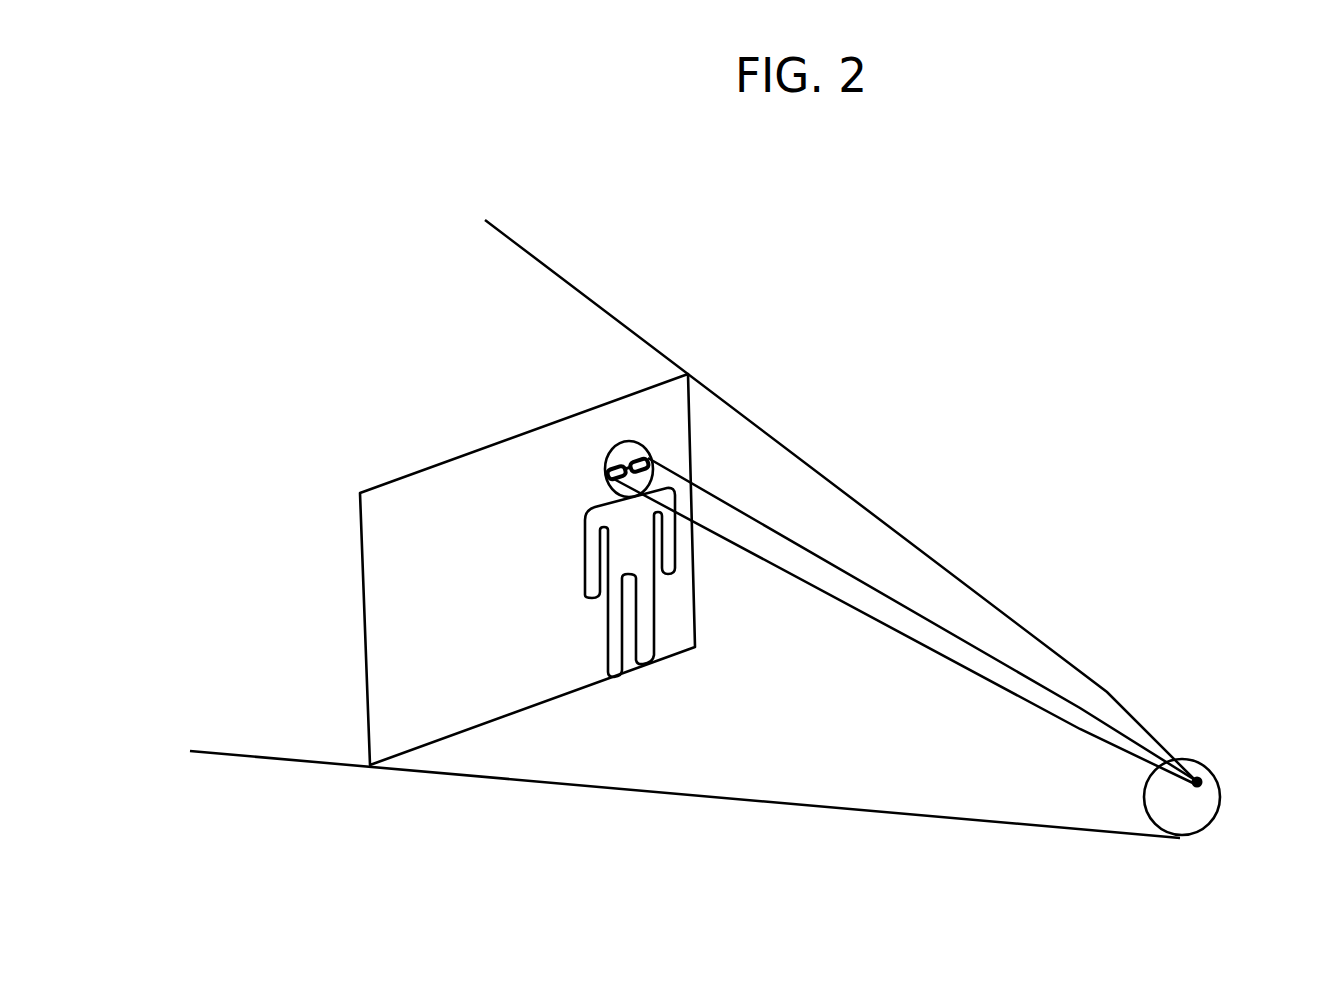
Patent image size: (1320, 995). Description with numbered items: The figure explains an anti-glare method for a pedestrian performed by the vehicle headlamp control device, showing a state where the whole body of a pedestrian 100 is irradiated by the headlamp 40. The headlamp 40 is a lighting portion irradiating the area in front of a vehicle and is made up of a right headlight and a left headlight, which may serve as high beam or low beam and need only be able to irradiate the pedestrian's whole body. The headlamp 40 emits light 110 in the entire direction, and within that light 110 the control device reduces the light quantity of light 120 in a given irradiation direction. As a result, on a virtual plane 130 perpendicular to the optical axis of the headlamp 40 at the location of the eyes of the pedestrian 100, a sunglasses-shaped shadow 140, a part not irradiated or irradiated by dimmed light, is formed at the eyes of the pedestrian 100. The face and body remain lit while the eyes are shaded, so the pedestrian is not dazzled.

The headlamp 40 is at (1225, 730).
The pedestrian 100 is at (613, 458).
The light emitted from the headlamp in the entire direction 110 is at (920, 547).
The light in a given irradiation direction 120 is at (978, 648).
The virtual plane 130 is at (623, 398).
The sunglasses-shaped shadow 140 is at (642, 457).